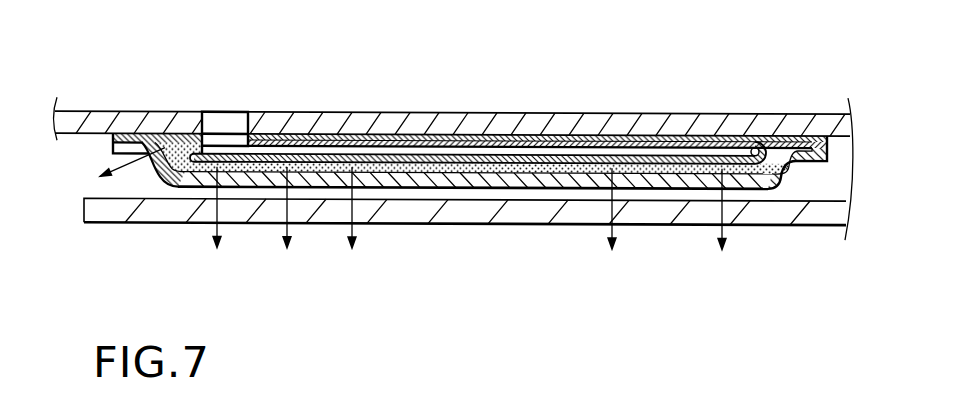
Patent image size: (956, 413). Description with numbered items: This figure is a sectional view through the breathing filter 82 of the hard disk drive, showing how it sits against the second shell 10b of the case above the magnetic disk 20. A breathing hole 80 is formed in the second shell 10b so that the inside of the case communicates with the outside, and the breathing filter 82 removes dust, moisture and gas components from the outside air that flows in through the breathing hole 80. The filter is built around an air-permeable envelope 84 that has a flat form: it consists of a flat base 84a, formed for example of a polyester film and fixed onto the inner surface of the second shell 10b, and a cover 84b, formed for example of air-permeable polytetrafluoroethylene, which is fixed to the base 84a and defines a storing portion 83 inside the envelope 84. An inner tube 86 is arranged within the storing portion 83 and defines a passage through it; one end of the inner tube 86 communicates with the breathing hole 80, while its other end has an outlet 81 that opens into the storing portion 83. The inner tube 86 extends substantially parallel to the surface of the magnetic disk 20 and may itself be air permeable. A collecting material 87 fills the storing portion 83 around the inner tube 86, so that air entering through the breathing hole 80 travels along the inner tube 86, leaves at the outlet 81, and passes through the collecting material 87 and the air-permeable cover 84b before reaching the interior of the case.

The second shell 10b is at (568, 125).
The magnetic disk 20 is at (652, 224).
The breathing hole 80 is at (228, 121).
The outlet 81 is at (758, 145).
The breathing filter 82 is at (460, 188).
The storing portion 83 is at (546, 170).
The envelope 84 is at (448, 82).
The base 84a is at (355, 138).
The cover 84b is at (420, 172).
The inner tube 86 is at (662, 133).
The collecting material 87 is at (173, 187).